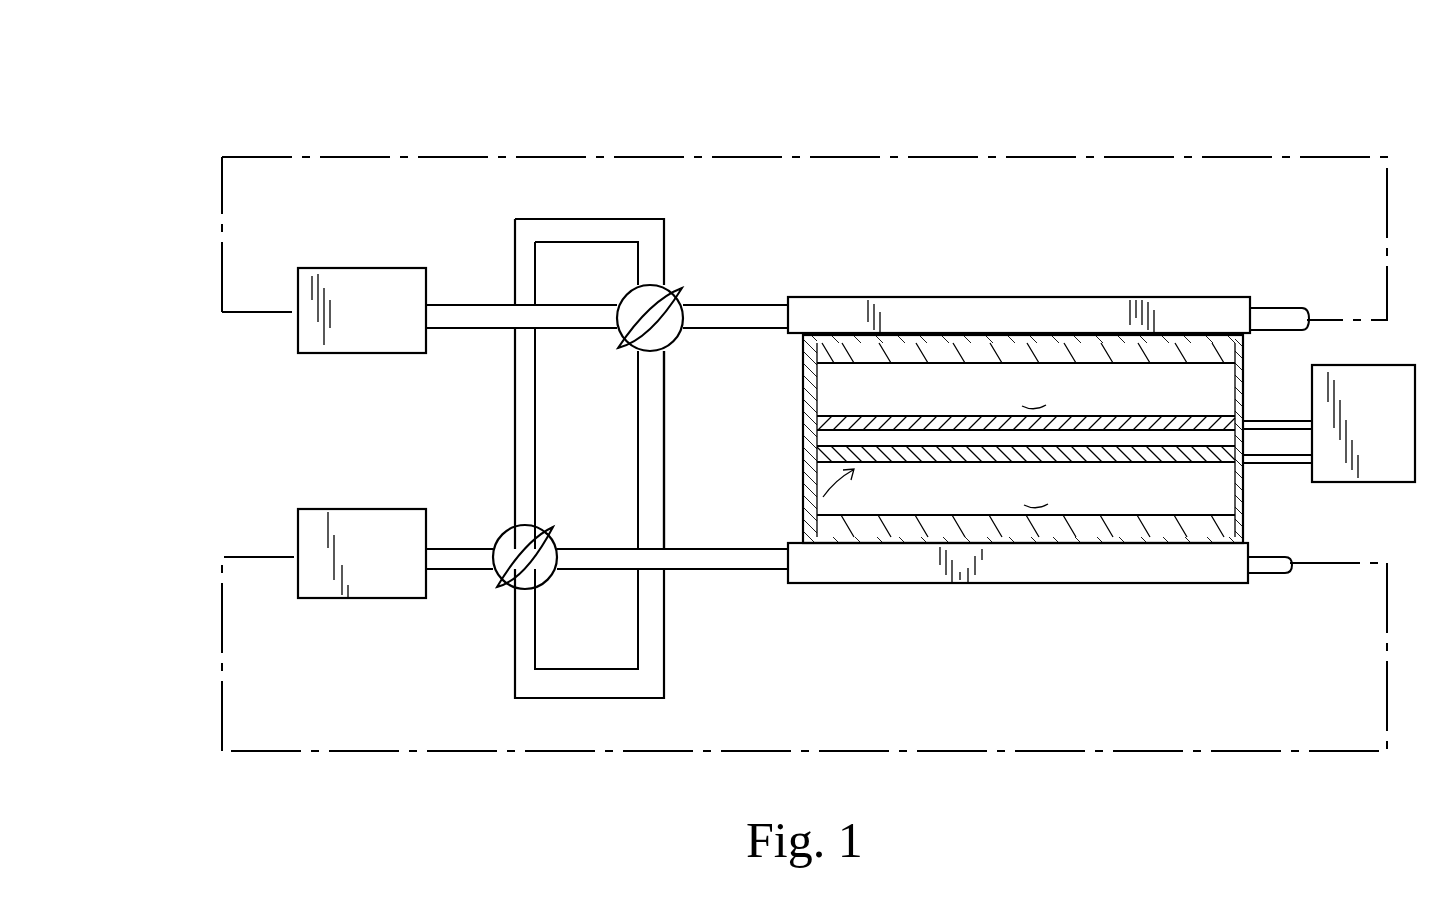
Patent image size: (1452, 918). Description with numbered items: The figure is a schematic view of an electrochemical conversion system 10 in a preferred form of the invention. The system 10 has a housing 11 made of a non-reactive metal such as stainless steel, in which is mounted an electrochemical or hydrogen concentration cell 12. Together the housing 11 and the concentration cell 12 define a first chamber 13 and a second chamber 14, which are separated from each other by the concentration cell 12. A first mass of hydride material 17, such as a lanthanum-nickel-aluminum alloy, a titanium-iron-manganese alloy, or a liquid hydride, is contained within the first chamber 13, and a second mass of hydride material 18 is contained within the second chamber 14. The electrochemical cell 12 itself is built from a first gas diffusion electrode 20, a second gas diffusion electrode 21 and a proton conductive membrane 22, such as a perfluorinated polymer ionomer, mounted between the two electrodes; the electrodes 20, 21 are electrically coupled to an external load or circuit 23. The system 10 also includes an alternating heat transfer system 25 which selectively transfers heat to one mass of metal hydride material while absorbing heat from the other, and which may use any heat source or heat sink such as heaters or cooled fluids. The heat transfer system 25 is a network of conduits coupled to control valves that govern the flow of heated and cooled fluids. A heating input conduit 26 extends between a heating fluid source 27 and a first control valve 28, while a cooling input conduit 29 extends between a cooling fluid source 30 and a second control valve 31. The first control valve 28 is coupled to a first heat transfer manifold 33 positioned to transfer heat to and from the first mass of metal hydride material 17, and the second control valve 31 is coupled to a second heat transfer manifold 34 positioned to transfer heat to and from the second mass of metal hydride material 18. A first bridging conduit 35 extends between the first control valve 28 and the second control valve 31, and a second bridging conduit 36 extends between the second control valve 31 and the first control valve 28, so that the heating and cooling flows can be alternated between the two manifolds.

The electrochemical conversion system 10 is at (408, 83).
The alternating heat transfer system 25 is at (268, 408).
The housing 11 is at (805, 385).
The hydrogen concentration cell 12 is at (810, 495).
The first chamber 13 is at (1038, 393).
The second chamber 14 is at (1040, 492).
The first mass of hydride material 17 is at (1212, 360).
The second mass of hydride material 18 is at (1212, 520).
The first gas diffusion electrode 20 is at (825, 413).
The second gas diffusion electrode 21 is at (830, 458).
The proton conductive membrane 22 is at (948, 435).
The external load 23 is at (1396, 483).
The heating input conduit 26 is at (470, 330).
The heating fluid source 27 is at (383, 272).
The first control valve 28 is at (680, 293).
The cooling input conduit 29 is at (460, 548).
The cooling fluid source 30 is at (380, 599).
The second control valve 31 is at (548, 574).
The first heat transfer manifold 33 is at (960, 297).
The second heat transfer manifold 34 is at (983, 584).
The first bridging conduit 35 is at (664, 422).
The second bridging conduit 36 is at (605, 219).